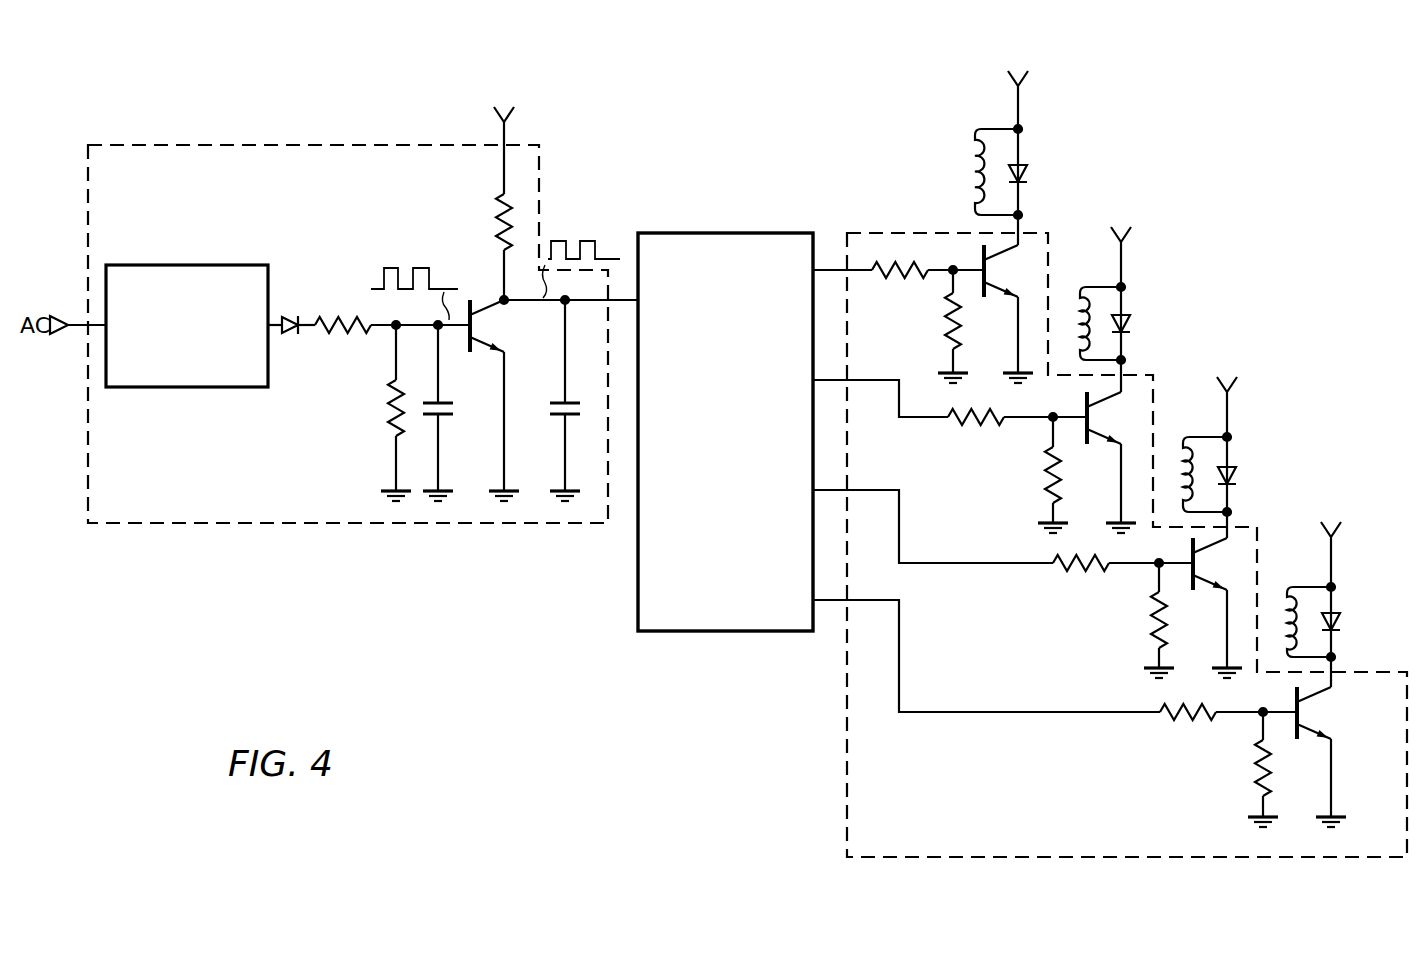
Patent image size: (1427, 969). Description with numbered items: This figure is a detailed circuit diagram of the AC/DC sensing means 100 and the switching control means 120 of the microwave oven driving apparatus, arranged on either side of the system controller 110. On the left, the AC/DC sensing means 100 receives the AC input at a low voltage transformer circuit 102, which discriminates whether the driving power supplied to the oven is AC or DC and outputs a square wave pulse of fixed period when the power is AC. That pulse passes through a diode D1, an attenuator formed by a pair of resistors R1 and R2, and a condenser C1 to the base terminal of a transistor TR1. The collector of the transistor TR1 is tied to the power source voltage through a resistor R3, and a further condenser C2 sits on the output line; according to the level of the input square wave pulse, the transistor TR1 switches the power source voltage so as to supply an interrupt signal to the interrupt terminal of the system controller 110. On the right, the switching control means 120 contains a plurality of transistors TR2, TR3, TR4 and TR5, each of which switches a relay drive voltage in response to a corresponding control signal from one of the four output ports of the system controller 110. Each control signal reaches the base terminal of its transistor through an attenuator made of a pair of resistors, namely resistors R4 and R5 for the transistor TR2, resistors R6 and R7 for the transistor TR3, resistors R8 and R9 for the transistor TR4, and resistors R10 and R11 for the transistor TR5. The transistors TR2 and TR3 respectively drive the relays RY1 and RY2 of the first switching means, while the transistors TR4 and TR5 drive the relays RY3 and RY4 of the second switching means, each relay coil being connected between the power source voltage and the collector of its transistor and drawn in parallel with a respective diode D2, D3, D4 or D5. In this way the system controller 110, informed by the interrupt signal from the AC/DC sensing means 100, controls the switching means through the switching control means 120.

The AC/DC sensing means 100 is at (325, 526).
The low voltage transformer circuit 102 is at (180, 388).
The system controller 110 is at (726, 632).
The switching control means 120 is at (1122, 858).
The diode D1 is at (295, 310).
The diode D2 is at (1029, 128).
The diode D3 is at (1133, 280).
The diode D4 is at (1239, 432).
The diode D5 is at (1343, 576).
The resistor R1 is at (343, 312).
The resistor R2 is at (386, 413).
The resistor R3 is at (492, 188).
The resistor R4 is at (900, 257).
The resistor R5 is at (941, 326).
The resistor R6 is at (976, 432).
The resistor R7 is at (1042, 475).
The resistor R8 is at (1081, 578).
The resistor R9 is at (1147, 620).
The resistor R10 is at (1188, 727).
The resistor R11 is at (1247, 769).
The condenser C1 is at (453, 413).
The condenser C2 is at (549, 400).
The transistor TR1 is at (507, 400).
The transistor TR2 is at (1013, 299).
The transistor TR3 is at (1115, 446).
The transistor TR4 is at (1222, 595).
The transistor TR5 is at (1328, 742).
The relay RY1 is at (976, 172).
The relay RY2 is at (1099, 309).
The relay RY3 is at (1205, 460).
The relay RY4 is at (1309, 609).